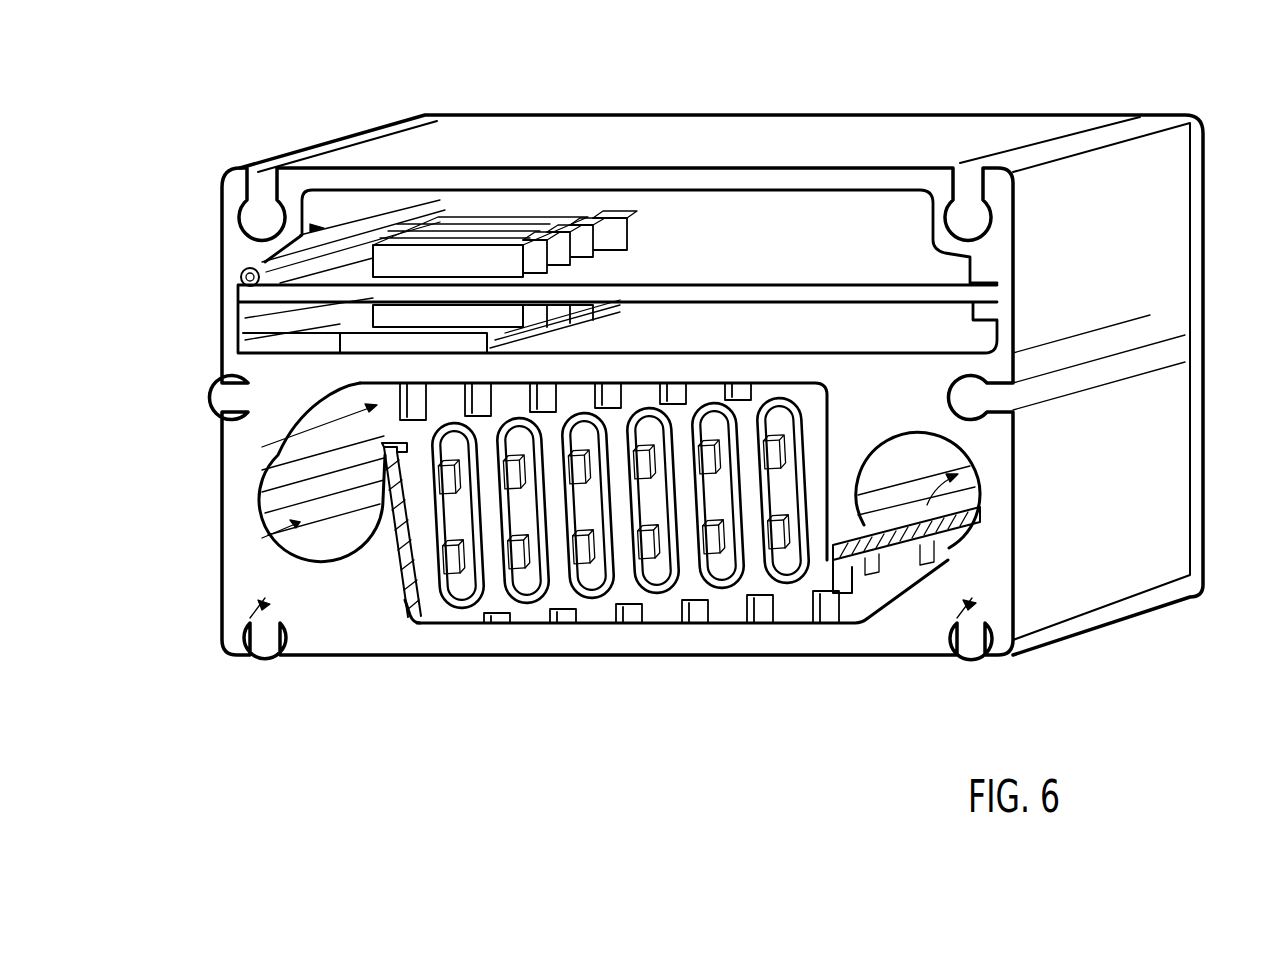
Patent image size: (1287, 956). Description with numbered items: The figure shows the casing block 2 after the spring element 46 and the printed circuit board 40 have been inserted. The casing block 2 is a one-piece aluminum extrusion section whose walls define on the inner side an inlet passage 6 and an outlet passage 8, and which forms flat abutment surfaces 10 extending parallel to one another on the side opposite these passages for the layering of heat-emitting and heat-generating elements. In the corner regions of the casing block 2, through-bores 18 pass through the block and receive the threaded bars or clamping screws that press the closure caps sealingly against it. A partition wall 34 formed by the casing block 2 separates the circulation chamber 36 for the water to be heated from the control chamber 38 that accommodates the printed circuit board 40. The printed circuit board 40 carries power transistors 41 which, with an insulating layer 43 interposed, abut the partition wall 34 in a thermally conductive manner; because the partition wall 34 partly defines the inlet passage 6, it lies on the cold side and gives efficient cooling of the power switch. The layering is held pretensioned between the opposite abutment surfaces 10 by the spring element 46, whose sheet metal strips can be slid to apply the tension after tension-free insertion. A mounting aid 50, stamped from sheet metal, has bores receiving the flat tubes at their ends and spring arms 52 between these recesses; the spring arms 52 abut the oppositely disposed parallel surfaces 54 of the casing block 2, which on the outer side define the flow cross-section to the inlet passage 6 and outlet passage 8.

The casing block 2 is at (1190, 114).
The inlet passage 6 is at (262, 538).
The outlet passage 8 is at (978, 540).
The abutment surface 10 is at (407, 603).
The through-bore 18 is at (252, 655).
The partition wall 34 is at (785, 372).
The circulation chamber 36 is at (262, 447).
The control chamber 38 is at (237, 228).
The printed circuit board 40 is at (850, 248).
The power transistors 41 is at (620, 215).
The insulating layer 43 is at (593, 323).
The spring element 46 is at (413, 620).
The mounting aid 50 is at (668, 605).
The spring arms 52 is at (632, 623).
The parallel surfaces 54 is at (700, 392).